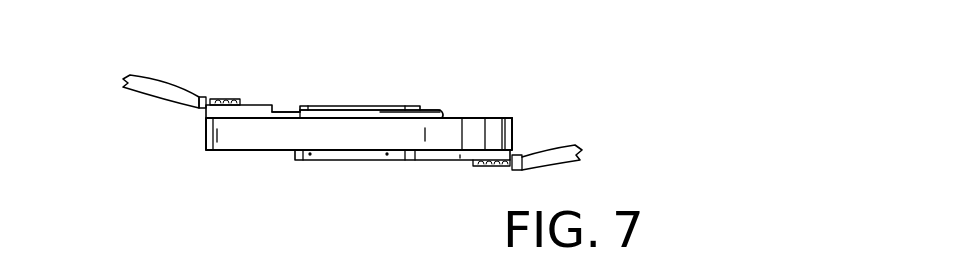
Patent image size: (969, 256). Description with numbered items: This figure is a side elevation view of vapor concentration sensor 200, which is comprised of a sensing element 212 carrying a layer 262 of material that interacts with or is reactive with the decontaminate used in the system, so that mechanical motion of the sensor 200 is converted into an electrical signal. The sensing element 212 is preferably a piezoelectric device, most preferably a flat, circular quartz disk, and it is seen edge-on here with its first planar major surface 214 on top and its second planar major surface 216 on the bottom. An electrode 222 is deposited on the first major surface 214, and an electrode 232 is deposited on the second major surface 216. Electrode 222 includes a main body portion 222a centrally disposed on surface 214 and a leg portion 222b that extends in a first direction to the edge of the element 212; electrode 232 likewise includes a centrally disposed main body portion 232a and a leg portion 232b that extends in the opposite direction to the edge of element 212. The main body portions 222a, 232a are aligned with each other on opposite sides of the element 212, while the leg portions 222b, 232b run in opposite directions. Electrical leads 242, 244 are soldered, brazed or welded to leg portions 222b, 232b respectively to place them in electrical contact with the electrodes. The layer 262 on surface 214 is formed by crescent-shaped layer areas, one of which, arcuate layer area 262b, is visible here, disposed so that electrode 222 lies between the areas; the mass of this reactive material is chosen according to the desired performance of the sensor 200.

The vapor concentration sensor 200 is at (560, 112).
The sensing element 212 is at (519, 121).
The first planar major surface 214 is at (474, 116).
The second planar major surface 216 is at (230, 152).
The electrode 222 is at (322, 103).
The main body portion 222a is at (396, 108).
The leg portion 222b is at (260, 105).
The electrode 232 is at (311, 163).
The main body portion 232a is at (365, 162).
The leg portion 232b is at (458, 163).
The electrical lead 242 is at (142, 90).
The electrical lead 244 is at (565, 165).
The layer 262 is at (434, 108).
The arcuate layer area 262b is at (357, 108).